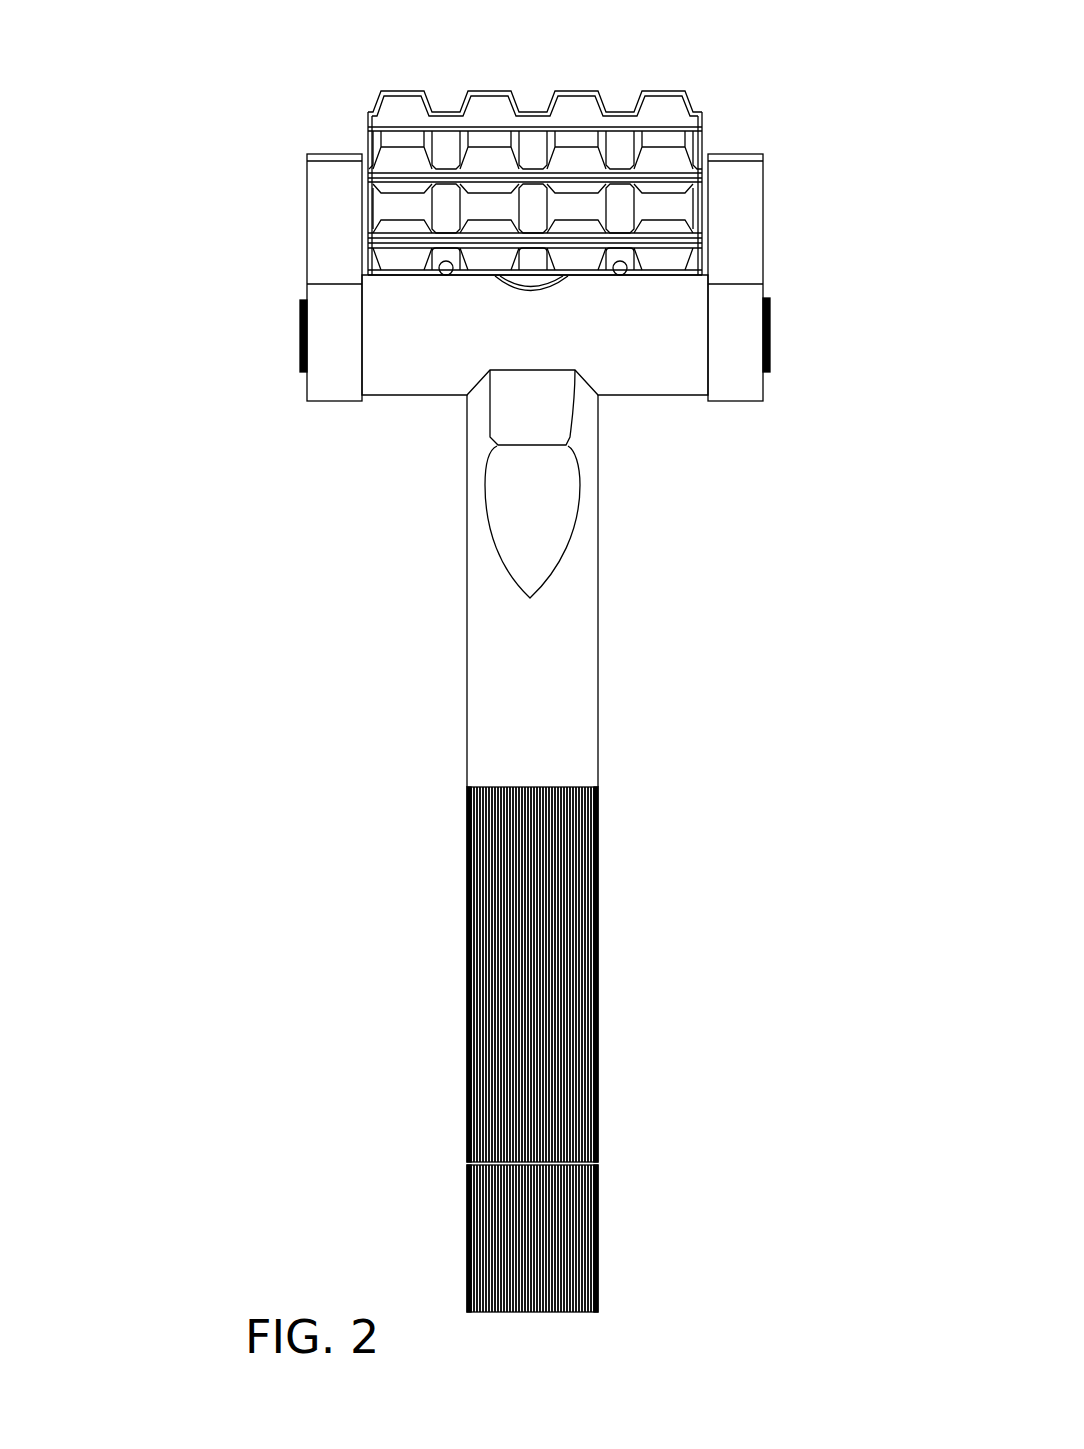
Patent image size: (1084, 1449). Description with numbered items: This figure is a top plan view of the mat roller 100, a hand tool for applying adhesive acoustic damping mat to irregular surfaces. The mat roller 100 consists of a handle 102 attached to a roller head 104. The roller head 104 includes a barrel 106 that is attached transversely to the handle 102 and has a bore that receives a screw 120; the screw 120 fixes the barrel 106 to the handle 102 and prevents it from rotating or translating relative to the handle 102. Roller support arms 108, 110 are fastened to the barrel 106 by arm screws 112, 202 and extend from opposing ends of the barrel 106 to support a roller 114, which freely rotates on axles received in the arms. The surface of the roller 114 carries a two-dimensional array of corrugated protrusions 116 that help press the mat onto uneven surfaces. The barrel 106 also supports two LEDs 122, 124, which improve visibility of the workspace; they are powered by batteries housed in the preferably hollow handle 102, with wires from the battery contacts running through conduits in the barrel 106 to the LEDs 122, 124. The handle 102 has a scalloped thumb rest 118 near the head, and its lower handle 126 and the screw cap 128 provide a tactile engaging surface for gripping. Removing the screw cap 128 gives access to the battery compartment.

The mat roller 100 is at (172, 26).
The handle 102 is at (500, 705).
The roller head 104 is at (847, 203).
The barrel 106 is at (668, 367).
The roller support arm 108 is at (317, 238).
The roller support arm 110 is at (743, 208).
The arm screw 112 is at (766, 340).
The roller 114 is at (705, 127).
The corrugated protrusions 116 is at (400, 110).
The scalloped thumb rest 118 is at (525, 517).
The screw 120 is at (527, 282).
The LED 122 is at (623, 278).
The LED 124 is at (443, 282).
The lower handle 126 is at (548, 932).
The screw cap 128 is at (588, 1205).
The arm screw 202 is at (300, 348).